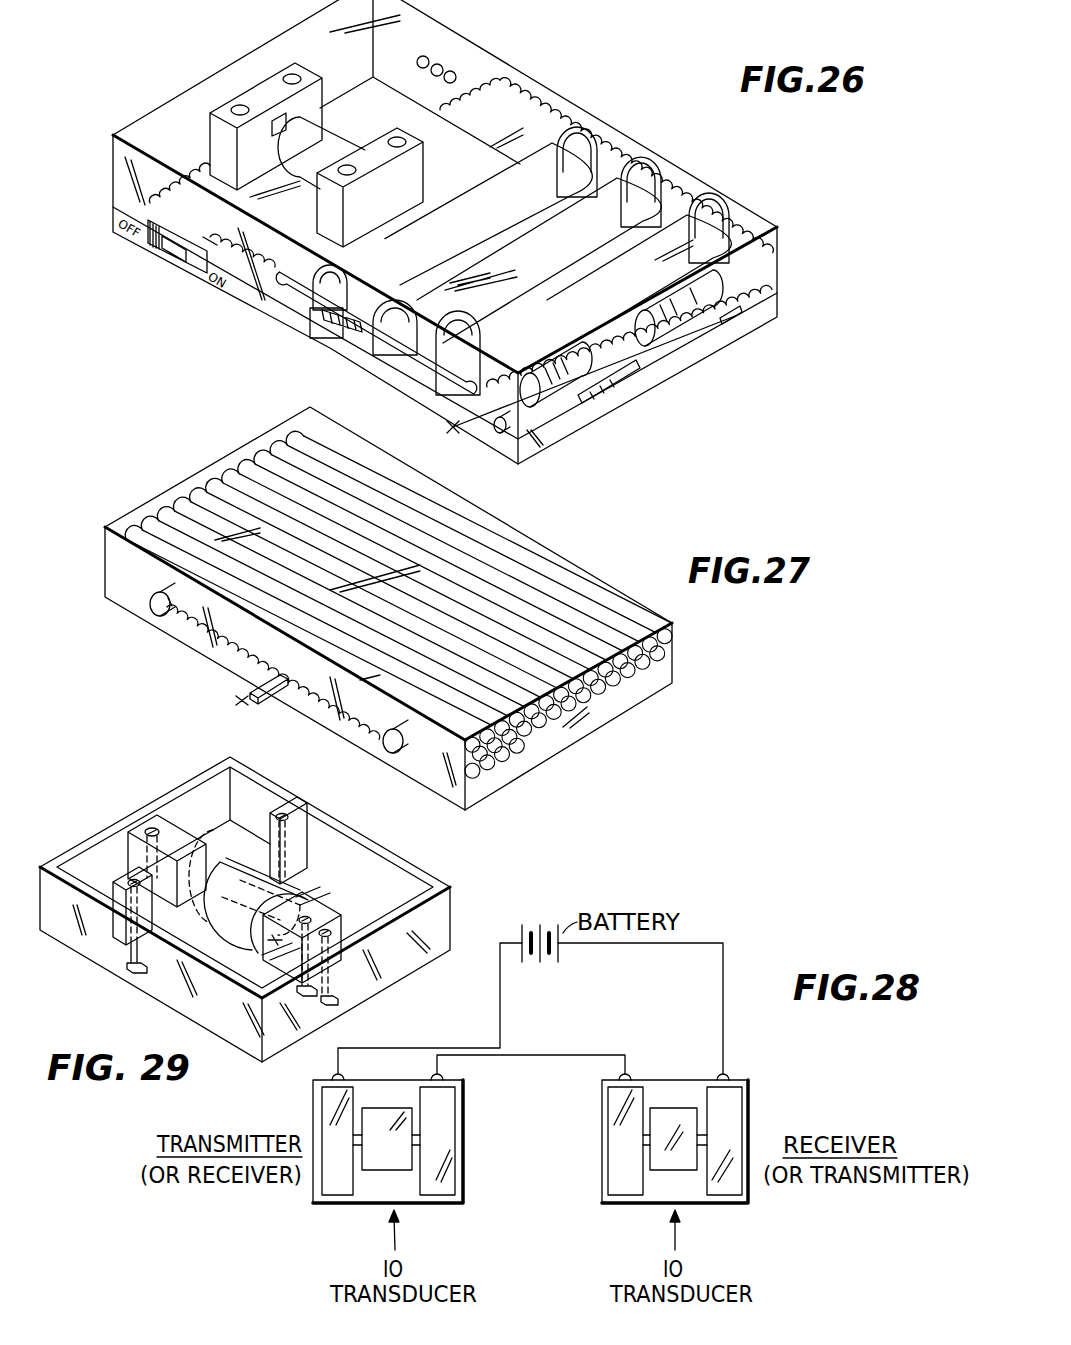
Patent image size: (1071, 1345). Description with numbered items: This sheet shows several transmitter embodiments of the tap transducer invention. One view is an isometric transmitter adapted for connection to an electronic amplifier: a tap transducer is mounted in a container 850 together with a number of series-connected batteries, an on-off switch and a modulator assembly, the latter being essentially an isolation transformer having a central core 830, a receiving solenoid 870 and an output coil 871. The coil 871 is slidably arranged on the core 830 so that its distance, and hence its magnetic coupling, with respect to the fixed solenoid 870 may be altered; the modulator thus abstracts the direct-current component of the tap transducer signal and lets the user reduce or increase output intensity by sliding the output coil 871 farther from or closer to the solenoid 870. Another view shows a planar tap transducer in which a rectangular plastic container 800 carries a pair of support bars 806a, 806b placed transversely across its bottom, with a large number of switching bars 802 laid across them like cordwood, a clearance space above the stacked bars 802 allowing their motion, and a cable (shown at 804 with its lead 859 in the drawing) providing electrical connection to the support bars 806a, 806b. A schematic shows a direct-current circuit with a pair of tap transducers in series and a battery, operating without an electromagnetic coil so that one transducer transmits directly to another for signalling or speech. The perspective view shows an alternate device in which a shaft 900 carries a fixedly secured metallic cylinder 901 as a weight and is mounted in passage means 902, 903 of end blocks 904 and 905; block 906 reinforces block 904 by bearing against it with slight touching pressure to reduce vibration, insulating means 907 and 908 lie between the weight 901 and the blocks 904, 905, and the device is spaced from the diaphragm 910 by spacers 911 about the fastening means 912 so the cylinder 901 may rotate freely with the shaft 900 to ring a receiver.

In FIG. 27, the rectangular plastic container 800 is at (395, 608).
In FIG. 27, the switching bars 802 is at (685, 662).
In FIG. 27, the connector plug 804 is at (268, 700).
In FIG. 27, the transverse support bar 806a is at (397, 746).
In FIG. 27, the transverse support bar 806b is at (157, 610).
In FIG. 26, the central core 830 is at (533, 412).
In FIG. 26, the container 850 is at (340, 338).
In FIG. 26, the lead wire 859 is at (460, 432).
In FIG. 26, the receiving solenoid 870 is at (733, 340).
In FIG. 26, the output coil 871 is at (567, 390).
In FIG. 29, the shaft 900 is at (250, 946).
In FIG. 29, the metallic cylinder 901 is at (312, 866).
In FIG. 29, the passage means 902 is at (210, 858).
In FIG. 29, the passage means 903 is at (275, 950).
In FIG. 29, the end block 904 is at (300, 815).
In FIG. 29, the end block 905 is at (322, 918).
In FIG. 29, the block 906 is at (175, 828).
In FIG. 29, the insulating means 907 is at (285, 862).
In FIG. 29, the insulating means 908 is at (292, 895).
In FIG. 29, the diaphragm 910 is at (115, 892).
In FIG. 29, the spacers 911 is at (147, 893).
In FIG. 29, the fastening means 912 is at (120, 836).